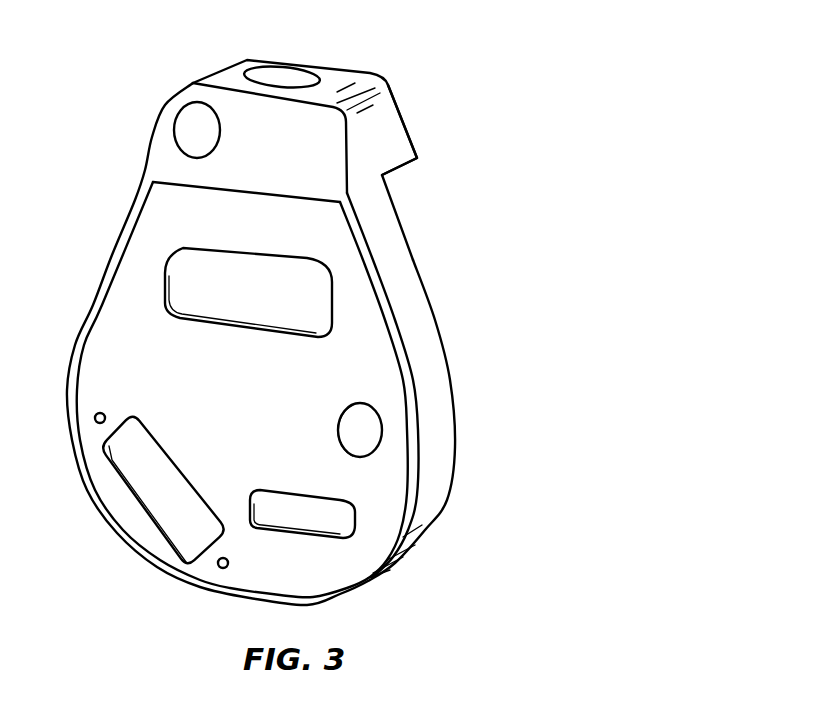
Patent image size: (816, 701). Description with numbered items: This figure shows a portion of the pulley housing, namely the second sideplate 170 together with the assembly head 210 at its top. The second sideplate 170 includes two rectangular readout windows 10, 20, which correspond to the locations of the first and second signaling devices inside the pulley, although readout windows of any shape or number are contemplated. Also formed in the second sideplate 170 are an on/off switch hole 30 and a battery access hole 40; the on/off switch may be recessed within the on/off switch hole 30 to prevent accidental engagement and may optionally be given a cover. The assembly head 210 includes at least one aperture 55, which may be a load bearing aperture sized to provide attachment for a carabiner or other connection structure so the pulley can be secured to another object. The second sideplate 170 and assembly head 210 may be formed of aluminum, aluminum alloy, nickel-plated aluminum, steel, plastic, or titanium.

The readout window 10 is at (300, 292).
The readout window 20 is at (327, 518).
The on/off switch hole 30 is at (362, 432).
The battery access hole 40 is at (170, 497).
The aperture 55 is at (295, 73).
The second sideplate 170 is at (552, 235).
The assembly head 210 is at (393, 140).